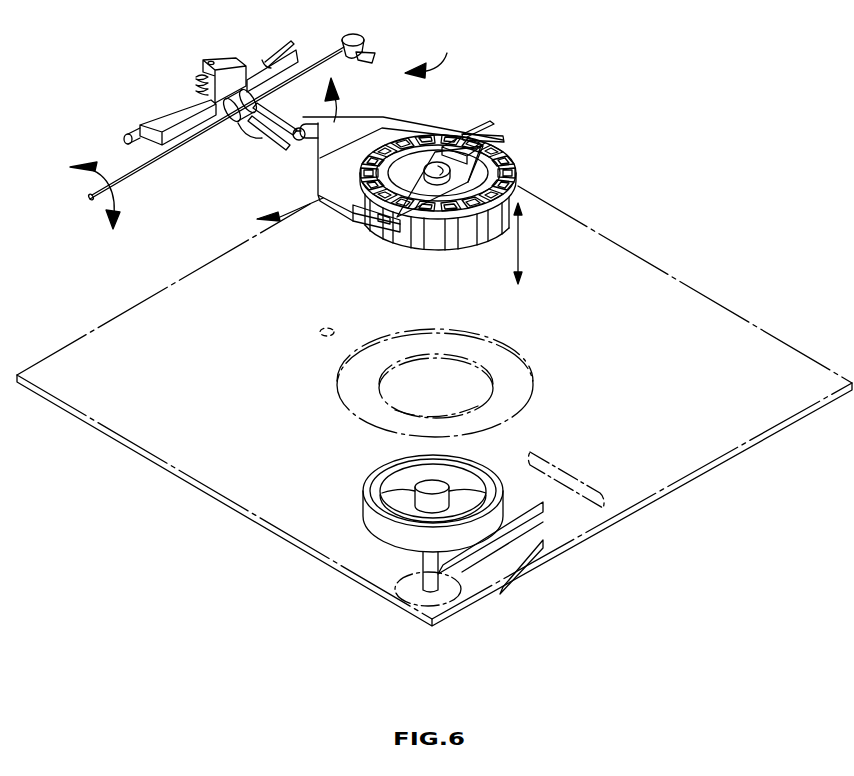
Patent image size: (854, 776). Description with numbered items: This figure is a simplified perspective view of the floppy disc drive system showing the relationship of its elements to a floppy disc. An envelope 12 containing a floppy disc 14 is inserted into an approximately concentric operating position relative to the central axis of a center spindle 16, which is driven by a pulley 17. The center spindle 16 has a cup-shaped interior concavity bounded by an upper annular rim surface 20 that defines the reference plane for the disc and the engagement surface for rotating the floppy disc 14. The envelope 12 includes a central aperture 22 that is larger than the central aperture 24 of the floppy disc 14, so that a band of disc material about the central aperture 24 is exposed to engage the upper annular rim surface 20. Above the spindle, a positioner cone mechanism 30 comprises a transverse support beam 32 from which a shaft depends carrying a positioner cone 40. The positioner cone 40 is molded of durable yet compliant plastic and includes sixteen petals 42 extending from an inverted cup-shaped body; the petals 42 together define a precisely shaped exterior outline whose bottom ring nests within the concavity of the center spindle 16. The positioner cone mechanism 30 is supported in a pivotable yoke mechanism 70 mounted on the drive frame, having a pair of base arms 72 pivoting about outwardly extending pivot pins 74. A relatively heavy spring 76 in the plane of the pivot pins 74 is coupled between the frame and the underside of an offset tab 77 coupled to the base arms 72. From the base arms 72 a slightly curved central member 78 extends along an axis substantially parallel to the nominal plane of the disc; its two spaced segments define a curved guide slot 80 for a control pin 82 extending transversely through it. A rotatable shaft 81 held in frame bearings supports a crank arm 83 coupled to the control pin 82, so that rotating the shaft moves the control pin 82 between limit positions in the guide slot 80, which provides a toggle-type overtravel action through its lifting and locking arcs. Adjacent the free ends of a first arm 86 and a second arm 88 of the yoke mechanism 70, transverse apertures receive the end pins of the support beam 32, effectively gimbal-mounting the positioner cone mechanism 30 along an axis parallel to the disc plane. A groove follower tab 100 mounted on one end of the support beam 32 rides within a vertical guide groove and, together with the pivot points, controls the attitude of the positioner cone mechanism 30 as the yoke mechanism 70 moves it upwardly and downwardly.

The envelope 12 is at (645, 292).
The floppy disc 14 is at (503, 378).
The center spindle 16 is at (392, 522).
The pulley 17 is at (410, 578).
The upper annular rim surface 20 is at (382, 485).
The central aperture 22 is at (448, 340).
The central aperture 24 is at (490, 390).
The positioner cone mechanism 30 is at (522, 176).
The transverse support beam 32 is at (404, 184).
The positioner cone 40 is at (512, 176).
The petals 42 is at (466, 236).
The pivotable yoke mechanism 70 is at (440, 45).
The base arms 72 is at (188, 122).
The pivot pins 74 is at (126, 134).
The spring 76 is at (196, 76).
The offset tab 77 is at (226, 58).
The central member 78 is at (312, 115).
The guide slot 80 is at (302, 140).
The rotatable shaft 81 is at (162, 162).
The control pin 82 is at (282, 146).
The crank arm 83 is at (264, 130).
The first arm 86 is at (370, 212).
The second arm 88 is at (444, 120).
The groove follower tab 100 is at (486, 128).